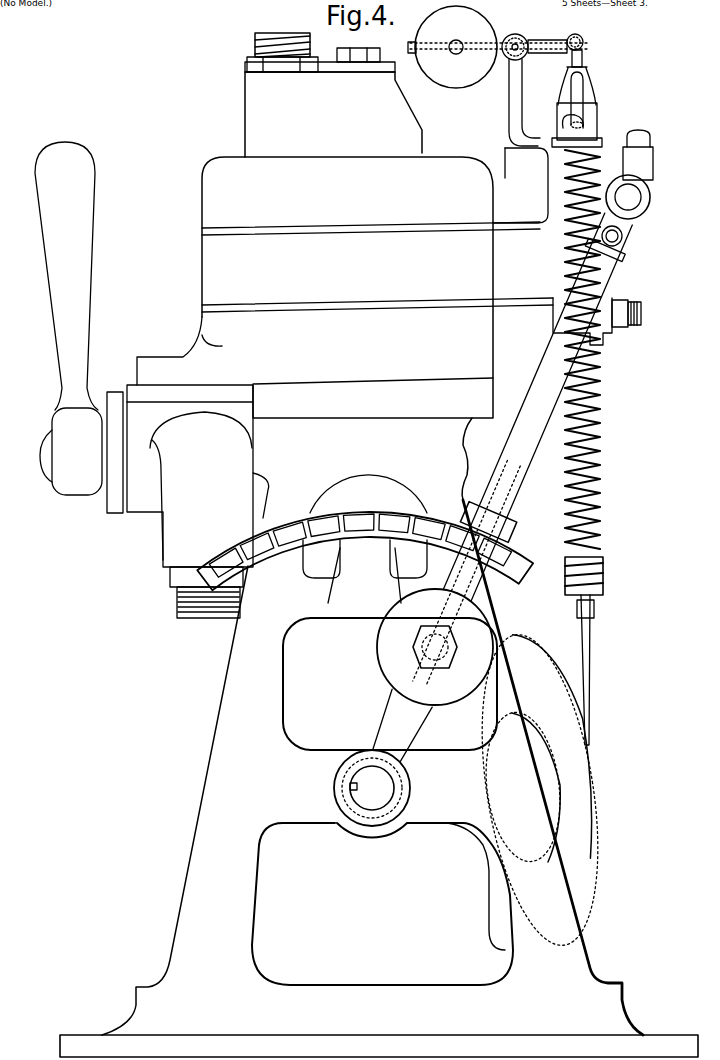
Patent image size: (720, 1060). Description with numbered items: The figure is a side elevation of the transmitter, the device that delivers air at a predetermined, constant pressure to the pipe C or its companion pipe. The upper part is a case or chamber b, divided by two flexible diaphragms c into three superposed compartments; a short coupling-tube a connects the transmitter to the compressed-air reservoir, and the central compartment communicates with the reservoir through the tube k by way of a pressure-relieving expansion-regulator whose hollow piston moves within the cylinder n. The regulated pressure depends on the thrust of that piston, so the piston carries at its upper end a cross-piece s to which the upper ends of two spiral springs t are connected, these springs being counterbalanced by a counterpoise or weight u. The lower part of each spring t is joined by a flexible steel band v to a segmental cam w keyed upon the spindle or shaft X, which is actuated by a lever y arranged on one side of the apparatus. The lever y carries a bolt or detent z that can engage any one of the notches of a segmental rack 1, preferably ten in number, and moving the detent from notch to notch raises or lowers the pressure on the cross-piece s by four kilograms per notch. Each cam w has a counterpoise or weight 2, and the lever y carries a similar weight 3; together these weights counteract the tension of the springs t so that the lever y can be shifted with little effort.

The coupling-tube a is at (255, 40).
The case or chamber b is at (315, 233).
The flexible membranes or diaphragms c is at (410, 228).
The cylinder n is at (548, 205).
The counterpoise or weight u is at (499, 47).
The cross-piece s is at (590, 105).
The tube k is at (633, 298).
The spiral springs t is at (598, 449).
The flexible steel band v is at (588, 683).
The lever y is at (517, 478).
The bolt or detent z is at (510, 523).
The segmental rack 1 is at (360, 518).
The counterpoise or weight 3 is at (393, 663).
The spindle or shaft X is at (352, 786).
The segmental cam w is at (515, 640).
The counterpoise or weight 2 is at (549, 745).
The pipe or pipe system C is at (198, 476).